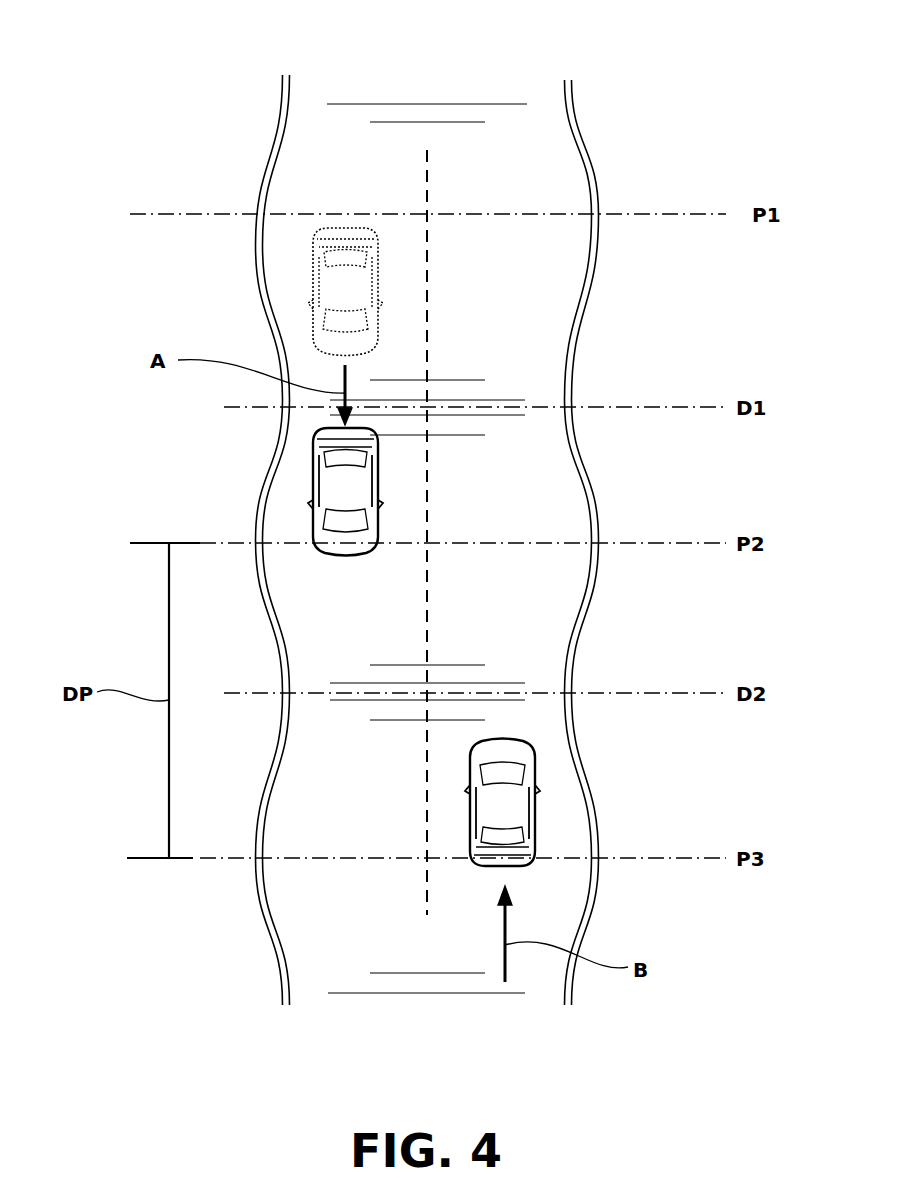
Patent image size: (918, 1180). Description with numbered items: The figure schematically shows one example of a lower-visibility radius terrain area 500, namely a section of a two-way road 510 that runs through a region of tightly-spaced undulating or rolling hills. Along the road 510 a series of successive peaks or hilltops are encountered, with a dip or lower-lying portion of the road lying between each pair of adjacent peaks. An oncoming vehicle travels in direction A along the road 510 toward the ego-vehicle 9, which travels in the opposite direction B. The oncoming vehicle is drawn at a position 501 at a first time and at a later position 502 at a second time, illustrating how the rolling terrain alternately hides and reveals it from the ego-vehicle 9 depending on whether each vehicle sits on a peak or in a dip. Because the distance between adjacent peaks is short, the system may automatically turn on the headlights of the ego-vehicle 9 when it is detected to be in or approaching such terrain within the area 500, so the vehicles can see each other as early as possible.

The lower-visibility radius terrain area 500 is at (444, 506).
The two-way road 510 is at (583, 145).
The position of oncoming vehicle at time t1 501 is at (313, 300).
The position of oncoming vehicle at time t2 502 is at (313, 496).
The ego-vehicle 9 is at (535, 800).